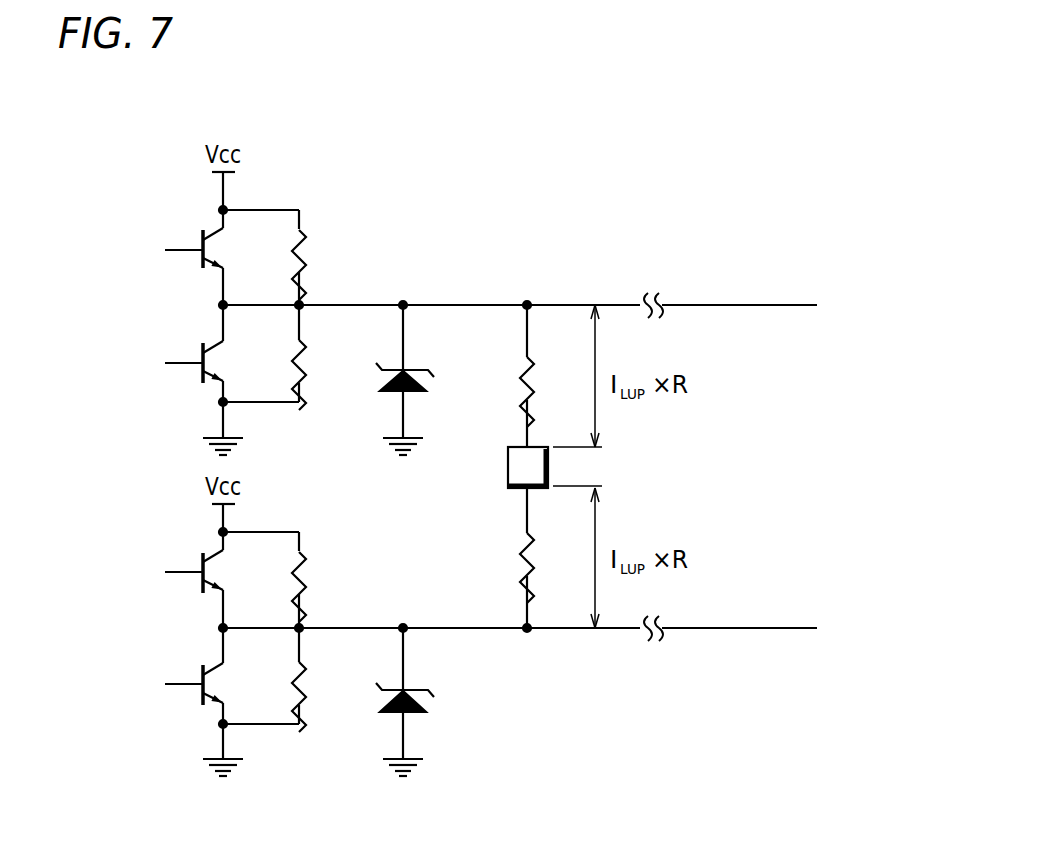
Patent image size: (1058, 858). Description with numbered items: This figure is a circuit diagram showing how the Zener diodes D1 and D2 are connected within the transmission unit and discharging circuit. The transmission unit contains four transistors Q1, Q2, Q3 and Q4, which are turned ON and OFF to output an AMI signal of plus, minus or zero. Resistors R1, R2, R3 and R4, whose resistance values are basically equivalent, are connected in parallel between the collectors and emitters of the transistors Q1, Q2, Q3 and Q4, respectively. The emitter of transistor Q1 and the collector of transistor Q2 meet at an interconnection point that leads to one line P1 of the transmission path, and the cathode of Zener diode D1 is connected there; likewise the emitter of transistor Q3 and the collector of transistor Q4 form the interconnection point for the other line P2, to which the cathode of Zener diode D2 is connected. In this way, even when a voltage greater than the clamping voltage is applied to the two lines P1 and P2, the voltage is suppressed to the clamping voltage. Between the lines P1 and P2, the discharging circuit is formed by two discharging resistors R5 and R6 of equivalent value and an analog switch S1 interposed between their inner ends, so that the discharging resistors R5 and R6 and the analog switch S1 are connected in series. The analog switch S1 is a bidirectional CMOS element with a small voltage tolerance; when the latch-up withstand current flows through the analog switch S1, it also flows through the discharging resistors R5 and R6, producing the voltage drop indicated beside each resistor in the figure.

The transistor Q1 is at (209, 257).
The transistor Q2 is at (209, 353).
The transistor Q3 is at (209, 580).
The transistor Q4 is at (209, 676).
The resistor R1 is at (316, 257).
The resistor R2 is at (316, 357).
The resistor R3 is at (316, 580).
The resistor R4 is at (316, 680).
The discharging resistor R5 is at (543, 376).
The discharging resistor R6 is at (543, 558).
The Zener diode D1 is at (408, 380).
The Zener diode D2 is at (408, 702).
The analog switch S1 is at (508, 468).
The line P1 is at (758, 287).
The line P2 is at (758, 610).